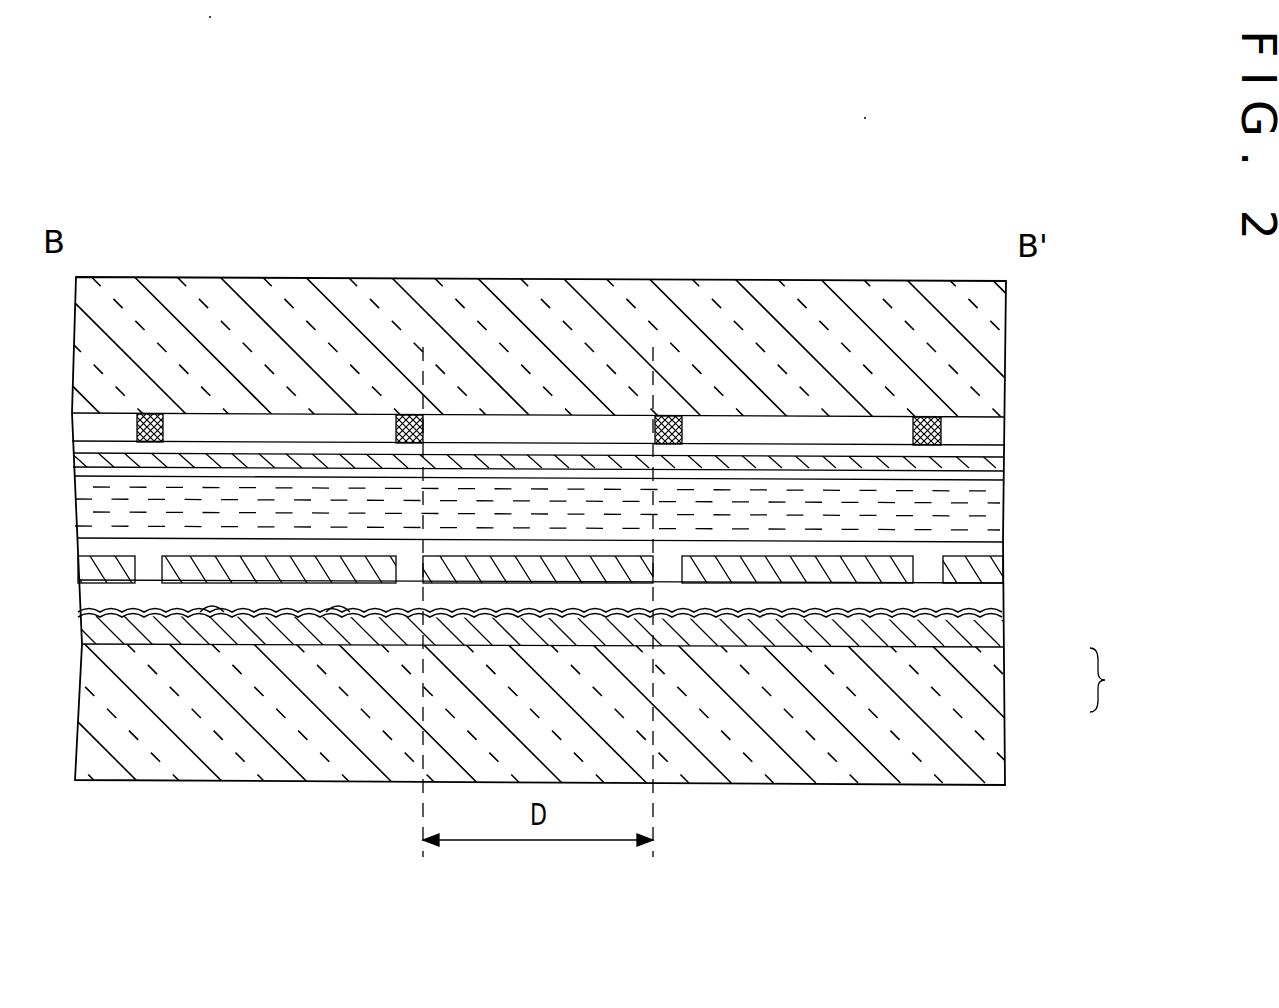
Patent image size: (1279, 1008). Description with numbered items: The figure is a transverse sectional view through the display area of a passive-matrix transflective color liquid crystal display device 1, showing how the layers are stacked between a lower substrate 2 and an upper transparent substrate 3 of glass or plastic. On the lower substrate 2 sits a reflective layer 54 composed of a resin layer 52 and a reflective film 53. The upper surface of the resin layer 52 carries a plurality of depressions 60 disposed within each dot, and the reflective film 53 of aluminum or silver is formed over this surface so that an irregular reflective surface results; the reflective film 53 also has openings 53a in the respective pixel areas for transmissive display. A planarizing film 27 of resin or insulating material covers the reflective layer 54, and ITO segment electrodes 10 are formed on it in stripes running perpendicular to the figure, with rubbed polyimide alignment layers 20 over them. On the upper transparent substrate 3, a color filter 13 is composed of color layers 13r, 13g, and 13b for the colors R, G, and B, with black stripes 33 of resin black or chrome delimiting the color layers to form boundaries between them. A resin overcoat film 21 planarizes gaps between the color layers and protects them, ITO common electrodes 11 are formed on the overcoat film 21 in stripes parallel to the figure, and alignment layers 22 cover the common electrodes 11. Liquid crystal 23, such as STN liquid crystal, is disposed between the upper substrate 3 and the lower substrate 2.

The liquid crystal device 1 is at (1001, 214).
The lower substrate 2 is at (1007, 732).
The upper transparent substrate 3 is at (770, 283).
The segment electrodes 10 is at (1003, 575).
The common electrodes 11 is at (1003, 465).
The color filter 13 is at (1003, 427).
The color layer 13r is at (233, 422).
The color layer 13g is at (596, 423).
The color layer 13b is at (865, 424).
The alignment layers 20 is at (1000, 548).
The resin overcoat film 21 is at (1003, 453).
The alignment layers 22 is at (1000, 478).
The liquid crystal 23 is at (1000, 508).
The planarizing film 27 is at (1003, 593).
The black stripes 33 is at (150, 414).
The resin layer 52 is at (1007, 650).
The reflective film 53 is at (1007, 637).
The openings 53a is at (273, 613).
The reflective layer 54 is at (1117, 680).
The depressions 60 is at (212, 604).